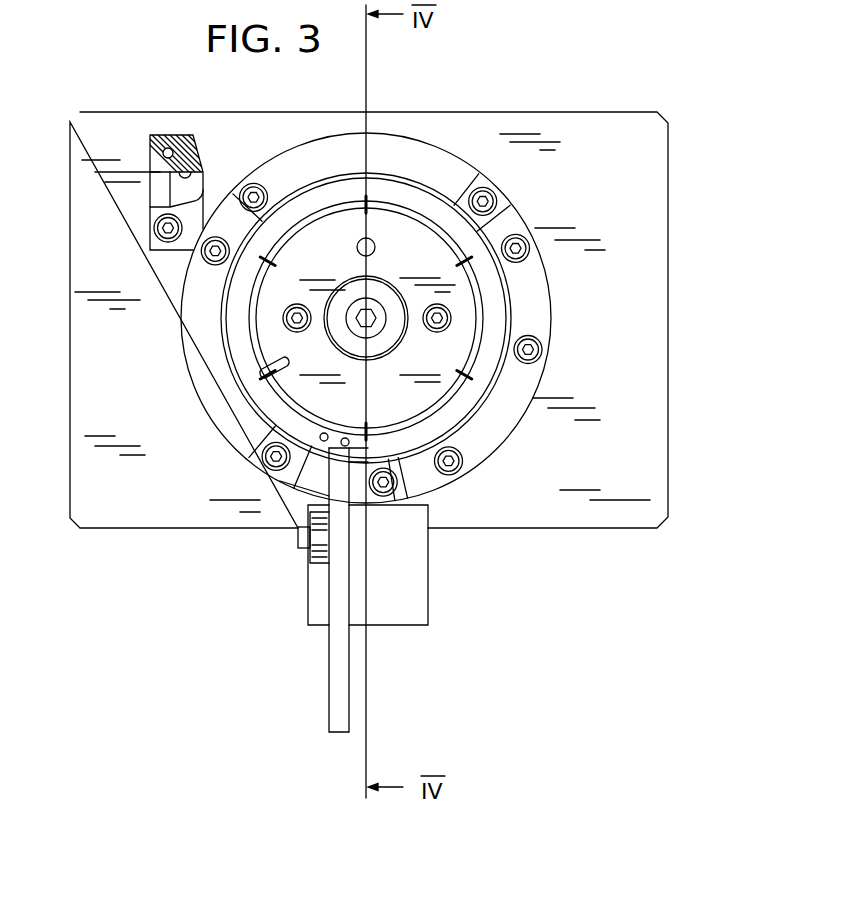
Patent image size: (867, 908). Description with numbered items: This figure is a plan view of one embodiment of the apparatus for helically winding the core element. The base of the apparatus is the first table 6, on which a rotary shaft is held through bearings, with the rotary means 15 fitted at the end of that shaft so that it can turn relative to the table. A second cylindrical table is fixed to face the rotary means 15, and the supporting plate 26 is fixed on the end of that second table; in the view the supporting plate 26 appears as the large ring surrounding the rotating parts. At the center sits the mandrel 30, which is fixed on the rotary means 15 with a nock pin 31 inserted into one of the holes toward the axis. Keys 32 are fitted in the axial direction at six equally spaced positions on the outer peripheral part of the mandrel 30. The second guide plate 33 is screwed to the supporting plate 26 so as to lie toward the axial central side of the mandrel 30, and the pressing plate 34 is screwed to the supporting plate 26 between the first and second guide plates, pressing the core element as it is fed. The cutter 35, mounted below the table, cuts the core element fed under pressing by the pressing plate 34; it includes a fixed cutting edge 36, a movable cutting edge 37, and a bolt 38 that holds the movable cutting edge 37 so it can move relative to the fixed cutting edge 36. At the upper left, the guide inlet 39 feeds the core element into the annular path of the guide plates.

The first table 6 is at (538, 127).
The rotary means 15 is at (337, 457).
The supporting plate 26 is at (202, 347).
The mandrel 30 is at (275, 334).
The nock pin 31 is at (372, 240).
The keys 32 is at (277, 360).
The second guide plate 33 is at (460, 407).
The pressing plate 34 is at (503, 407).
The cutter 35 is at (320, 627).
The fixed cutting edge 36 is at (357, 462).
The movable cutting edge 37 is at (310, 443).
The bolt 38 is at (298, 530).
The guide inlet 39 is at (194, 152).